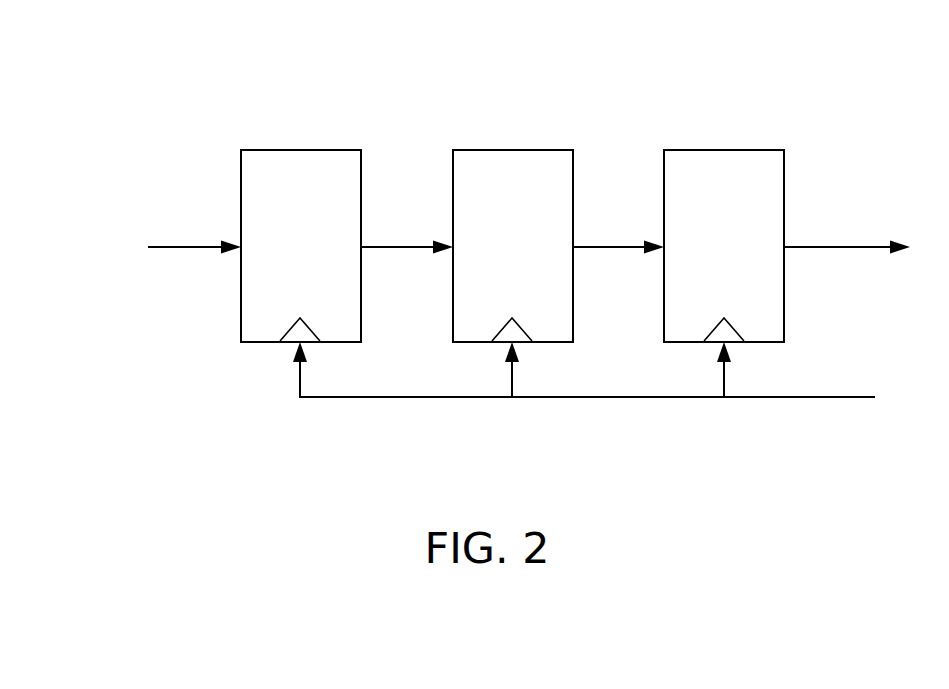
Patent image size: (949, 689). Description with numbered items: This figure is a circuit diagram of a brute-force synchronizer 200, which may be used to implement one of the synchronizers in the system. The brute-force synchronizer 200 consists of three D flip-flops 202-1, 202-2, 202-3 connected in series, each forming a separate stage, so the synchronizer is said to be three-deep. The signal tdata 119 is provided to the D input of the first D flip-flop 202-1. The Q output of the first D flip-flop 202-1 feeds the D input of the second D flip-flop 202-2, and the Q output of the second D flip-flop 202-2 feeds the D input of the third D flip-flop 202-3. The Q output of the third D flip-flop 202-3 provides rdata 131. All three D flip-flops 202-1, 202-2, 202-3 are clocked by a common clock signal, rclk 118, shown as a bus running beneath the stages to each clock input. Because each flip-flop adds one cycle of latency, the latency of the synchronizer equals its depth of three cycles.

The brute-force synchronizer 200 is at (306, 76).
The first D flip-flop 202-1 is at (277, 201).
The second D flip-flop 202-2 is at (489, 201).
The third D flip-flop 202-3 is at (700, 201).
The tdata 119 is at (184, 237).
The rdata 131 is at (847, 238).
The rclk 118 is at (584, 369).